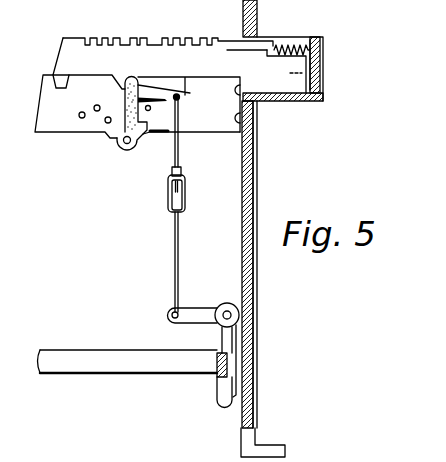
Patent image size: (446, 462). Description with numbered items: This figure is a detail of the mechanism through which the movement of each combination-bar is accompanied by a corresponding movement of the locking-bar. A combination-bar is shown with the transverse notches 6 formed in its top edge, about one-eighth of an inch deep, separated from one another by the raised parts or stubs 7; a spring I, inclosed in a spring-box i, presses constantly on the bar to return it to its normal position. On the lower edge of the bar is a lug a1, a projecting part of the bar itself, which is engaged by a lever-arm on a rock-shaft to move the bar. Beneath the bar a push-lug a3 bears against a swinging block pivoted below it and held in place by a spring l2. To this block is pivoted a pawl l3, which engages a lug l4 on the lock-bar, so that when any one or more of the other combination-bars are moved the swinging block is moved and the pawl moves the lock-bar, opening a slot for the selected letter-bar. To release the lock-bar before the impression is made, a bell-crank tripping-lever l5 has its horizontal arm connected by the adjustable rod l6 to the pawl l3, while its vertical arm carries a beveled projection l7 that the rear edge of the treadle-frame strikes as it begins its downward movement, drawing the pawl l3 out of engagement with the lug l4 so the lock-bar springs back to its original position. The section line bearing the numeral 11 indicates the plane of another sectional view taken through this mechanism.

The transverse notches 6 is at (320, 72).
The raised parts or stubs 7 is at (121, 38).
The bar 11 is at (70, 54).
The spring I is at (284, 46).
The spring-box i is at (320, 42).
The lug a1 is at (66, 90).
The push-lug a3 is at (120, 82).
The spring l2 is at (158, 135).
The pawl l3 is at (180, 98).
The lug l4 is at (198, 82).
The adjustable rod l6 is at (178, 245).
The beveled projection l7 is at (217, 366).
The bell-crank tripping-lever l5 is at (217, 395).